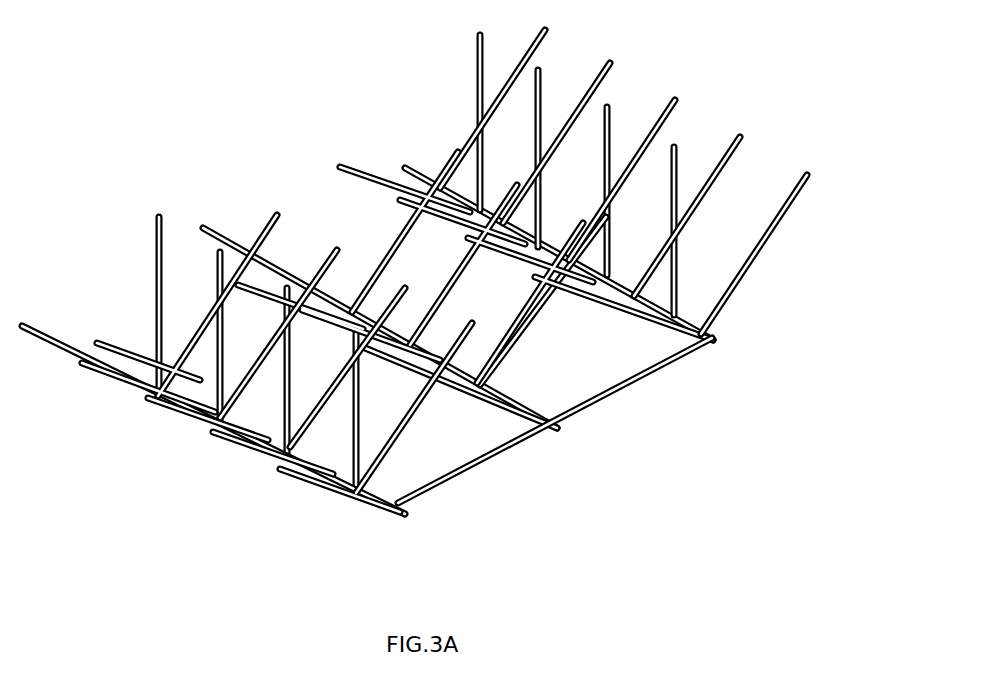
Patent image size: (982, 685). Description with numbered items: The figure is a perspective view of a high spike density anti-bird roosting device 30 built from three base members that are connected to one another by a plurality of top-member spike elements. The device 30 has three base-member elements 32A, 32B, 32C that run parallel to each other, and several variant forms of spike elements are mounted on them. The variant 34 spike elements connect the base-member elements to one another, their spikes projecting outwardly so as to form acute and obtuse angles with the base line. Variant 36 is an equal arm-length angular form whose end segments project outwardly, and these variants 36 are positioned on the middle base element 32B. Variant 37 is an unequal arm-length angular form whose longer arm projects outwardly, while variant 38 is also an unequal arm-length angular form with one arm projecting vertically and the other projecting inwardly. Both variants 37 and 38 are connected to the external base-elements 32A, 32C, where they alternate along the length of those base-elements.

The anti-bird roosting device 30 is at (455, 288).
The base-member element 32A is at (408, 517).
The base-member element 32B is at (560, 430).
The base-member element 32C is at (713, 342).
The top-member spike element 34 is at (792, 203).
The top-member spike element 36 is at (520, 330).
The top-member spike element 37 is at (735, 162).
The top-member spike element 38 is at (681, 275).